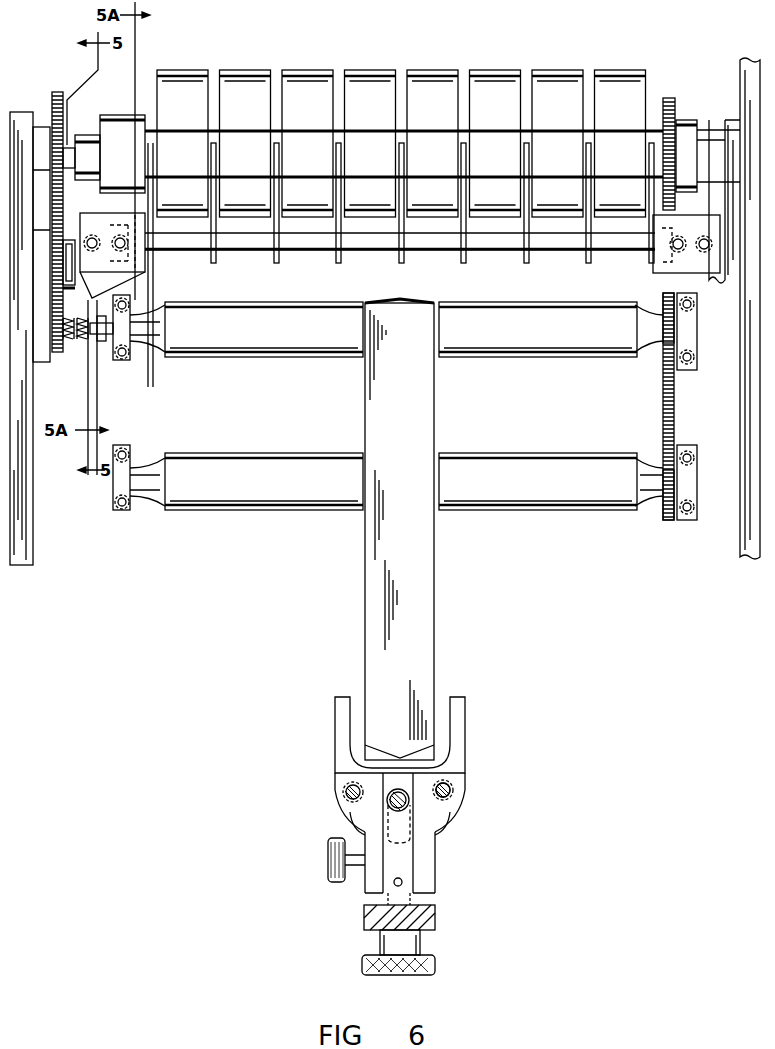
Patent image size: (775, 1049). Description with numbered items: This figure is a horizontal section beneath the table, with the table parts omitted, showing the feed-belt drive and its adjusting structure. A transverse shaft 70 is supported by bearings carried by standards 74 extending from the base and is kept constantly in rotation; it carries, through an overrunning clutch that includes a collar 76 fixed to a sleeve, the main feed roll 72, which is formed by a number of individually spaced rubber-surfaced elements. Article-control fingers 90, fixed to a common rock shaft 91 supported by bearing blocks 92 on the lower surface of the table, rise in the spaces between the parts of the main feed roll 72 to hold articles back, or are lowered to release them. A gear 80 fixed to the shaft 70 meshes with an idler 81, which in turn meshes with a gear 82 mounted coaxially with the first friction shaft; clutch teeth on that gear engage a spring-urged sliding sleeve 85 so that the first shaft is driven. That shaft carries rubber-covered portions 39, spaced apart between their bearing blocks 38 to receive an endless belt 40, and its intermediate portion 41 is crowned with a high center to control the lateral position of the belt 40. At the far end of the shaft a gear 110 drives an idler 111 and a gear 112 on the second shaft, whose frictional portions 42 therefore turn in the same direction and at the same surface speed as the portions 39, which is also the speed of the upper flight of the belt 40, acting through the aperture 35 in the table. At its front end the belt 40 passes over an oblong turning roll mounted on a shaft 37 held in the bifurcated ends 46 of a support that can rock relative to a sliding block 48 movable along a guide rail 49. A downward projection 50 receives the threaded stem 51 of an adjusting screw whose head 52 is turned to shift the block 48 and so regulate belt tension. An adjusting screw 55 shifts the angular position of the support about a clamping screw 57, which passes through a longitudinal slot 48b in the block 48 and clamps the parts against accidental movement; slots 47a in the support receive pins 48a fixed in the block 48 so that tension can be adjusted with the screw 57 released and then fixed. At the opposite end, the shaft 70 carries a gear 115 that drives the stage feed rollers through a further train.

The aperture 35 is at (683, 445).
The shaft 37 is at (142, 490).
The bearing blocks 38 is at (125, 362).
The portions of shaft 39 is at (396, 329).
The endless belt 40 is at (399, 531).
The portion of shaft 41 is at (438, 332).
The portions of shaft 42 is at (401, 481).
The bifurcated ends 46 is at (342, 713).
The slots 47a is at (450, 785).
The sliding block 48 is at (343, 790).
The pins 48a is at (452, 792).
The longitudinal slot 48b is at (405, 840).
The guide rail 49 is at (400, 862).
The downward projection 50 is at (420, 921).
The threaded stem 51 is at (412, 899).
The head 52 is at (430, 967).
The adjusting screw 55 is at (336, 882).
The clamping screw 57 is at (410, 803).
The transverse shaft 70 is at (70, 147).
The main feed roll 72 is at (430, 88).
The standards 74 is at (45, 135).
The collar 76 is at (112, 130).
The gear 80 is at (58, 94).
The idler 81 is at (73, 275).
The gear 82 is at (66, 345).
The sliding sleeve 85 is at (90, 342).
The article-control fingers 90 is at (341, 160).
The rock shaft 91 is at (440, 240).
The bearing blocks 92 is at (92, 218).
The gear 110 is at (672, 334).
The idler 111 is at (664, 405).
The gear 112 is at (672, 485).
The gear 115 is at (668, 96).